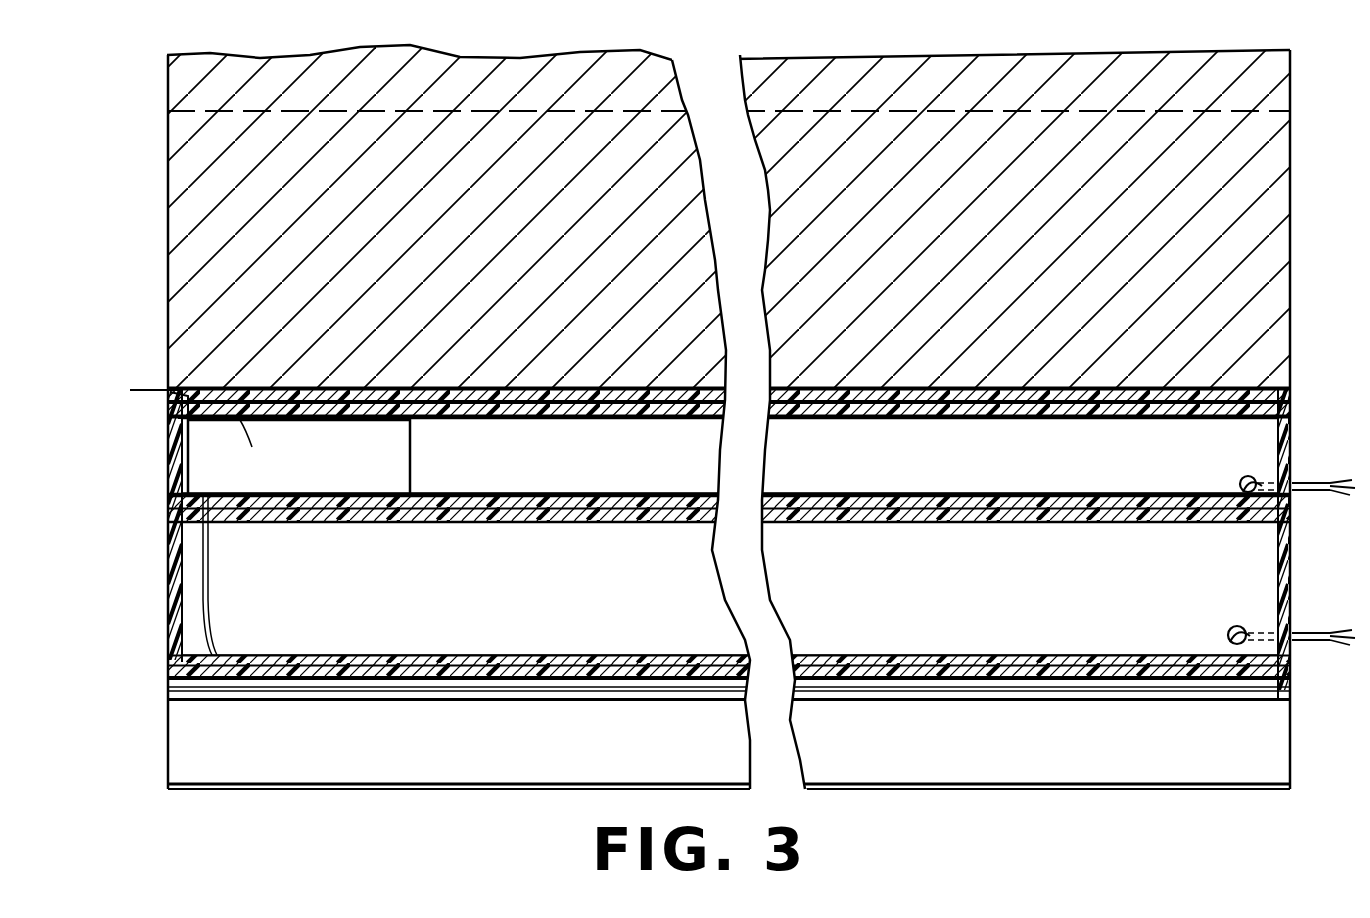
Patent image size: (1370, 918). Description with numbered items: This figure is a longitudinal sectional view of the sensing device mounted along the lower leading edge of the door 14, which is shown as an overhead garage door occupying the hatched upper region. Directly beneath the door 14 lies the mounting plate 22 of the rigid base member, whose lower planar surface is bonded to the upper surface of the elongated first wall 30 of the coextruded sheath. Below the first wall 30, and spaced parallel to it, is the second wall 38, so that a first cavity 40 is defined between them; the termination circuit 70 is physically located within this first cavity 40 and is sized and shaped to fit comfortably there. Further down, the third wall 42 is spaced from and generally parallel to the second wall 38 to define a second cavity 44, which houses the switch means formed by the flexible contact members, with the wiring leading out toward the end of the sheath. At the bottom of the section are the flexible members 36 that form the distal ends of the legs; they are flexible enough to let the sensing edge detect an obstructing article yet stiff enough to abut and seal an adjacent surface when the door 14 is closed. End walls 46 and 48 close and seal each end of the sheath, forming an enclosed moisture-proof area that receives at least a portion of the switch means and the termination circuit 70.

The door 14 is at (572, 300).
The mounting plate 22 is at (468, 398).
The first wall 30 is at (462, 418).
The first cavity 40 is at (614, 473).
The second wall 38 is at (334, 495).
The second cavity 44 is at (584, 608).
The third wall 42 is at (341, 657).
The flexible members 36 is at (517, 743).
The end wall 46 is at (172, 573).
The end wall 48 is at (1284, 552).
The termination circuit 70 is at (142, 396).